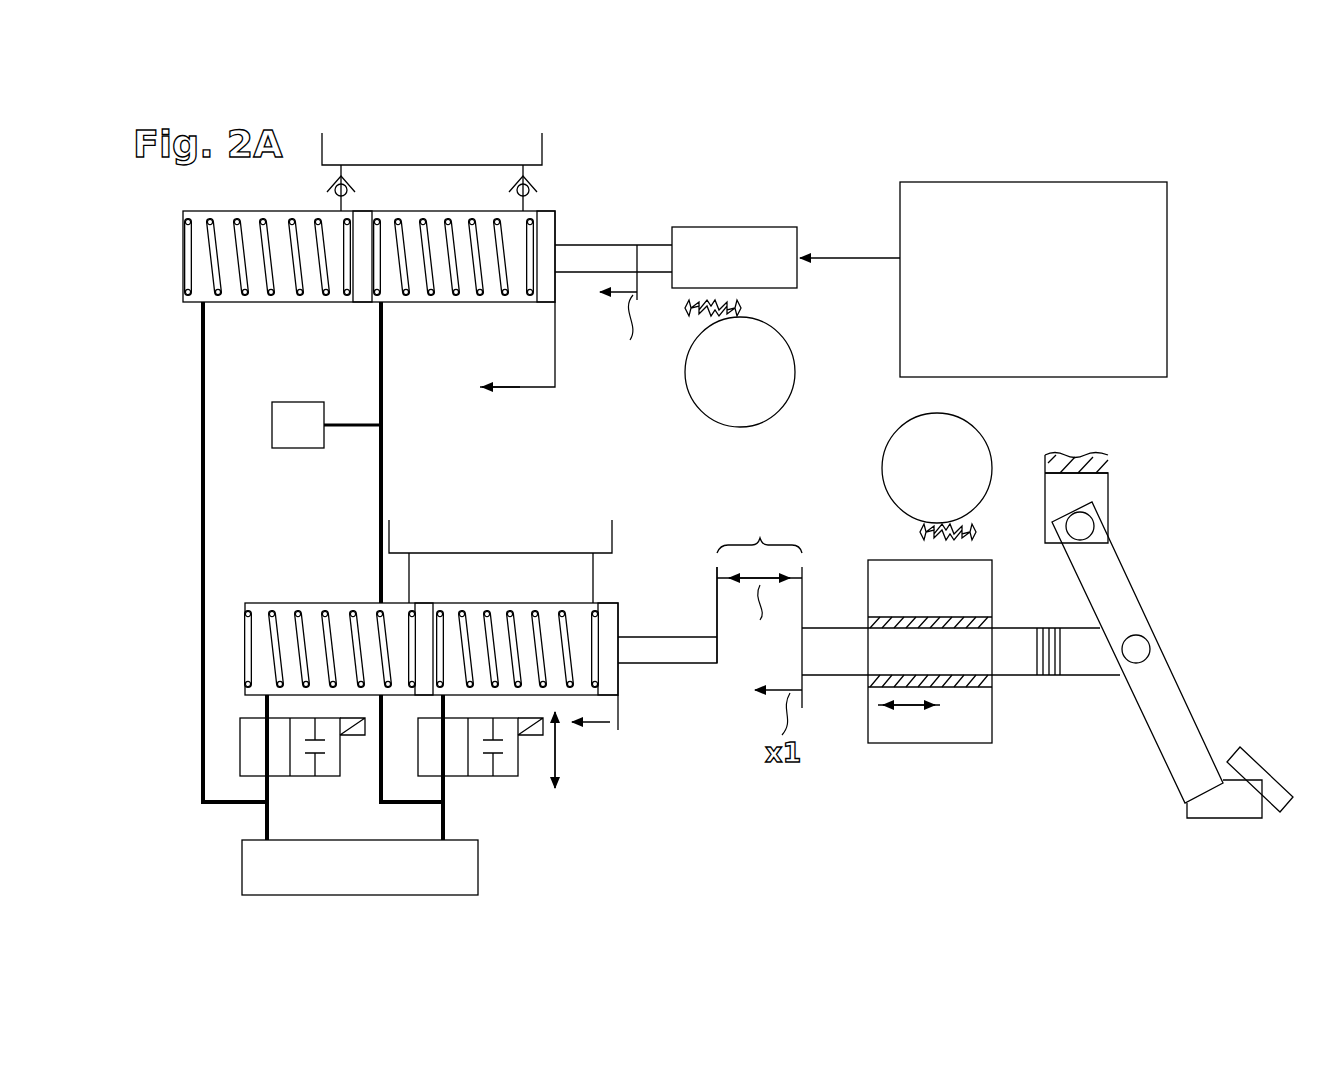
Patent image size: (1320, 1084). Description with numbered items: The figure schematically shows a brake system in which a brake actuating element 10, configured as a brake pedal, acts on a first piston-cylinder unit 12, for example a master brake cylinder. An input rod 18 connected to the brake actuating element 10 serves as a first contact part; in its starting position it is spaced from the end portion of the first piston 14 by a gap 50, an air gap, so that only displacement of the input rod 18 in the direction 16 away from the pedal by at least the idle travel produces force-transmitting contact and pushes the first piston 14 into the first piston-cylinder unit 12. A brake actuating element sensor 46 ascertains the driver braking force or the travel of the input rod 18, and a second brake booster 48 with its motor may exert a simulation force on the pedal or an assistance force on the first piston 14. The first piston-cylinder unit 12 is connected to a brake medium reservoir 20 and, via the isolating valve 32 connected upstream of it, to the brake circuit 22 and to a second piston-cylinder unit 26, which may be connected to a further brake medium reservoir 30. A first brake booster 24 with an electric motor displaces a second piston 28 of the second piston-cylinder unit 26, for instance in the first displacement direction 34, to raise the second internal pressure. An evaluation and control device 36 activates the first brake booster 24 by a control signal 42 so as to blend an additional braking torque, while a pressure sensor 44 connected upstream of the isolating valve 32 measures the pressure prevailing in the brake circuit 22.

The brake actuating element 10 is at (1170, 688).
The first piston-cylinder unit 12 is at (343, 610).
The first piston 14 is at (693, 655).
The direction 16 is at (600, 728).
The input rod 18 is at (828, 665).
The brake medium reservoir 20 is at (612, 535).
The brake circuit 22 is at (468, 883).
The first brake booster 24 is at (768, 240).
The second piston-cylinder unit 26 is at (417, 300).
The second piston 28 is at (580, 252).
The further brake medium reservoir 30 is at (545, 148).
The isolating valve 32 is at (330, 770).
The first displacement direction 34 is at (523, 388).
The evaluation and control device 36 is at (1148, 274).
The control signal 42 is at (868, 257).
The pressure sensor 44 is at (282, 448).
The brake actuating element sensor 46 is at (1050, 685).
The second brake booster 48 is at (950, 745).
The gap 50 is at (759, 610).